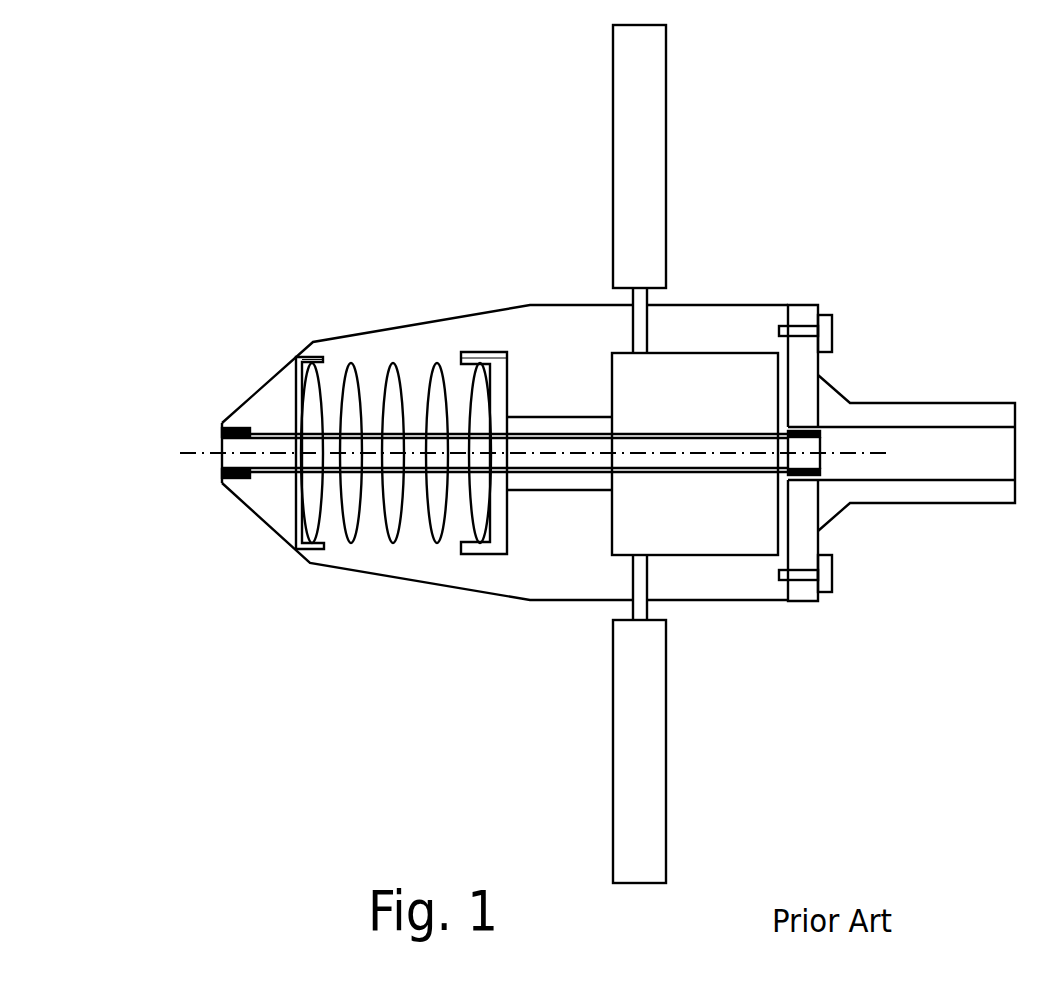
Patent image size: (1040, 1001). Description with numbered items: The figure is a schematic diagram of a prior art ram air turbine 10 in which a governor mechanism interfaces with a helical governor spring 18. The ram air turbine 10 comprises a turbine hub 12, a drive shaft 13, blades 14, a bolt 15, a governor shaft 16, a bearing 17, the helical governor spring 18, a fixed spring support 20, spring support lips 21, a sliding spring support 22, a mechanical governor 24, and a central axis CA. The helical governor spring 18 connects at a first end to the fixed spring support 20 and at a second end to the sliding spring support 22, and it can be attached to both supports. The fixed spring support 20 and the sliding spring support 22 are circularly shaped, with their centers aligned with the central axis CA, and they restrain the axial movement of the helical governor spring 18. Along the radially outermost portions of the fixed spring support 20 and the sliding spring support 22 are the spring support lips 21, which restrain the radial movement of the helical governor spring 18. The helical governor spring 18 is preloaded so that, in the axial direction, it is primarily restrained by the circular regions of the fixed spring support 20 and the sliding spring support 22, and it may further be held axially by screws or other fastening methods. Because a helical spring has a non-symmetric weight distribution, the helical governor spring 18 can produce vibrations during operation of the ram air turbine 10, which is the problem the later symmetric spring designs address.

The ram air turbine 10 is at (919, 120).
The turbine hub 12 is at (762, 303).
The drive shaft 13 is at (955, 402).
The blades 14 is at (615, 120).
The bolt 15 is at (823, 337).
The governor shaft 16 is at (807, 460).
The bearing 17 is at (537, 447).
The helical governor spring 18 is at (350, 363).
The fixed spring support 20 is at (293, 525).
The spring support lip 21 is at (316, 357).
The sliding spring support 22 is at (499, 520).
The mechanical governor 24 is at (685, 508).
The central axis CA is at (187, 452).